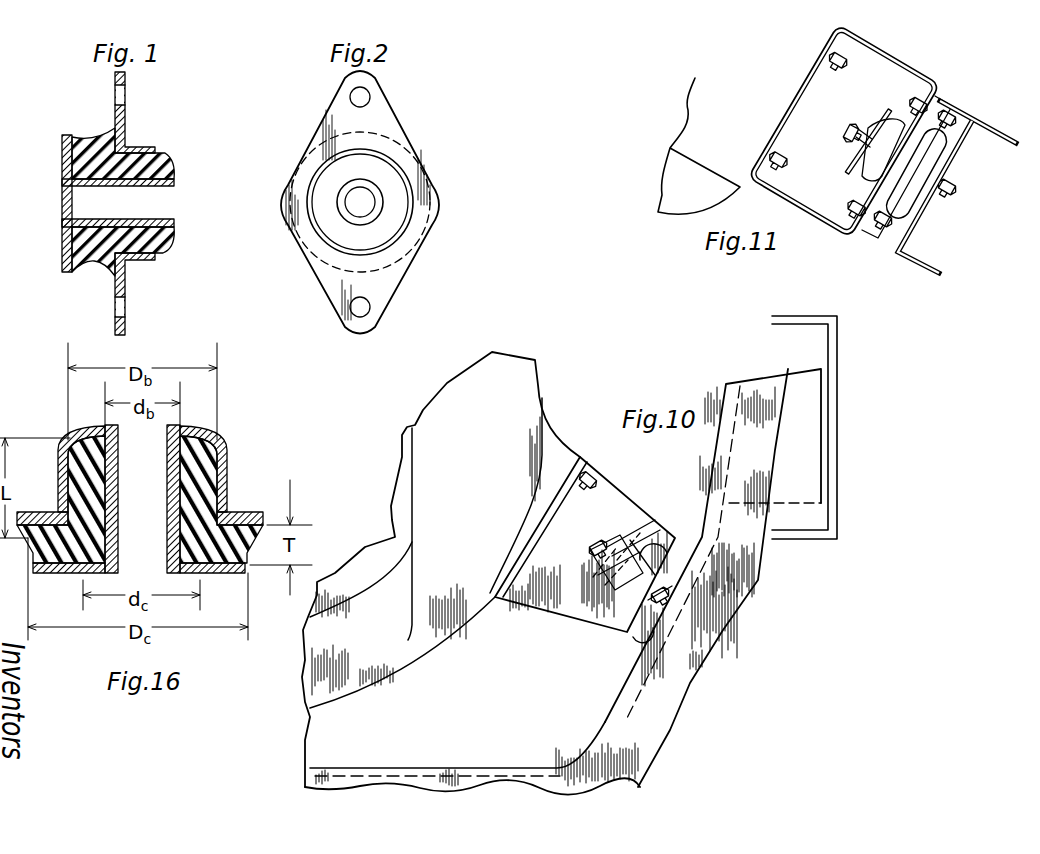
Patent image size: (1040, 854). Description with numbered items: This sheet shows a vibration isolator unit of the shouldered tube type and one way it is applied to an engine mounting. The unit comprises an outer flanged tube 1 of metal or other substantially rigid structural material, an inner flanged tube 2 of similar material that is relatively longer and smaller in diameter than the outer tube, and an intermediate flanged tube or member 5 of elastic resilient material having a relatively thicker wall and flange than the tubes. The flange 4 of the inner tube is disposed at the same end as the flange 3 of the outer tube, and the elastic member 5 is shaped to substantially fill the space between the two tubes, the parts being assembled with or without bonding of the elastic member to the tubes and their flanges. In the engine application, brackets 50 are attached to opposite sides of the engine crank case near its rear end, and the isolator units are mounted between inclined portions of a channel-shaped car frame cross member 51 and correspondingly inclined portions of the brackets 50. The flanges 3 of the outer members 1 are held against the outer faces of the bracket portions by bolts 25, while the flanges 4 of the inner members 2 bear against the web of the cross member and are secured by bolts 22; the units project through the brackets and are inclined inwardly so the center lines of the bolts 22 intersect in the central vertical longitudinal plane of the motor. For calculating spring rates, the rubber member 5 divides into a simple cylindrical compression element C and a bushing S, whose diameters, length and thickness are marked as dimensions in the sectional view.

In FIG. 1, the outer flanged tube 1 is at (119, 203).
In FIG. 1, the inner flanged tube 2 is at (174, 220).
In FIG. 1, the flange 3 is at (115, 287).
In FIG. 2, the flange 3 is at (313, 282).
In FIG. 11, the flange 3 is at (863, 233).
In FIG. 1, the flange 4 is at (62, 156).
In FIG. 2, the flange 4 is at (440, 213).
In FIG. 11, the flange 4 is at (907, 225).
In FIG. 1, the intermediate flanged tube or member 5 is at (160, 243).
In FIG. 10, the intermediate flanged tube or member 5 is at (677, 585).
In FIG. 11, the bolts 22 is at (843, 133).
In FIG. 11, the bolts 25 is at (887, 227).
In FIG. 10, the bolts 25 is at (652, 625).
In FIG. 11, the brackets 50 is at (800, 92).
In FIG. 10, the brackets 50 is at (633, 503).
In FIG. 11, the channel-shaped car frame cross member 51 is at (917, 267).
In FIG. 10, the channel-shaped car frame cross member 51 is at (617, 703).
In FIG. 16, the bushing S is at (220, 458).
In FIG. 16, the cylindrical compression element C is at (233, 518).